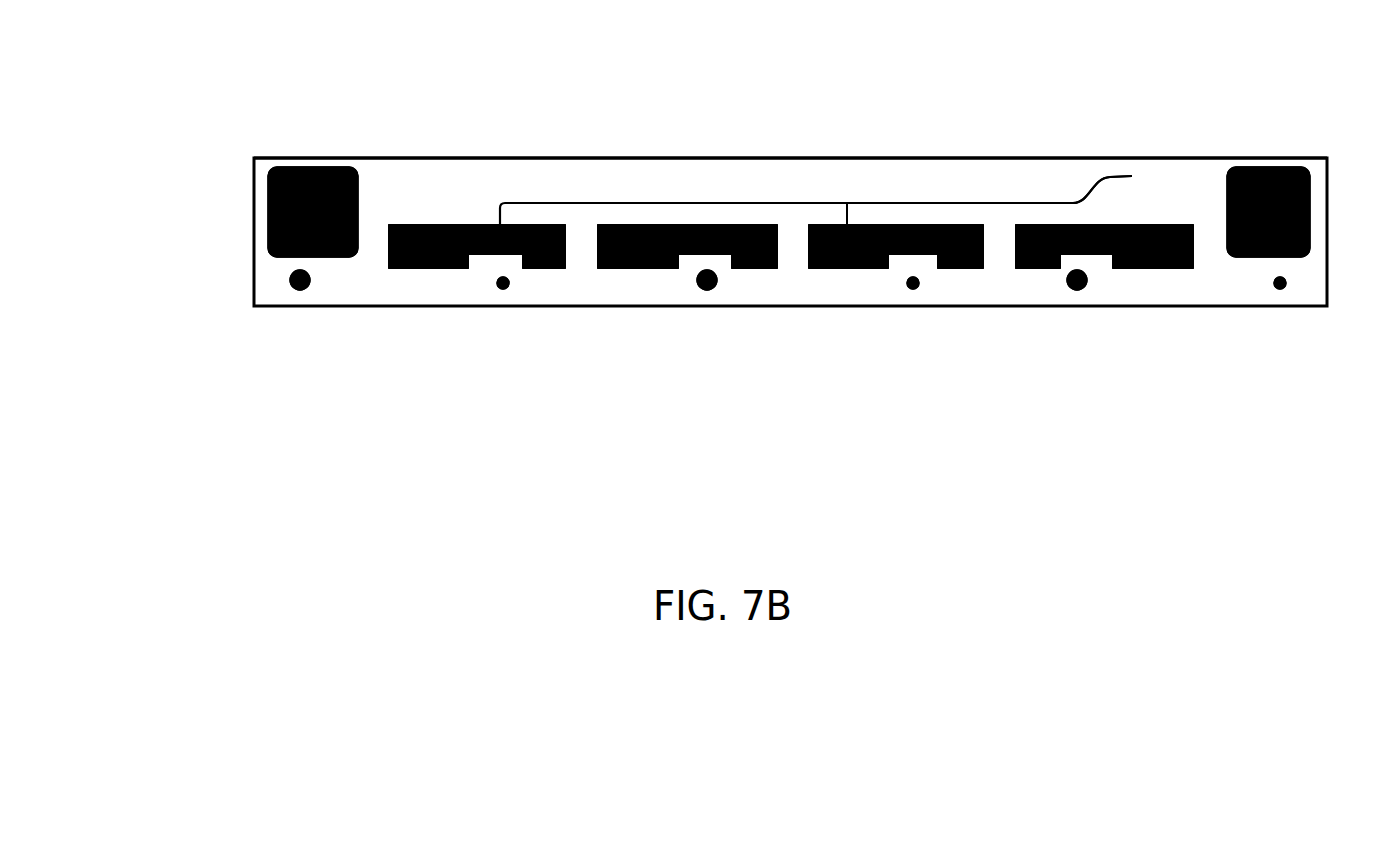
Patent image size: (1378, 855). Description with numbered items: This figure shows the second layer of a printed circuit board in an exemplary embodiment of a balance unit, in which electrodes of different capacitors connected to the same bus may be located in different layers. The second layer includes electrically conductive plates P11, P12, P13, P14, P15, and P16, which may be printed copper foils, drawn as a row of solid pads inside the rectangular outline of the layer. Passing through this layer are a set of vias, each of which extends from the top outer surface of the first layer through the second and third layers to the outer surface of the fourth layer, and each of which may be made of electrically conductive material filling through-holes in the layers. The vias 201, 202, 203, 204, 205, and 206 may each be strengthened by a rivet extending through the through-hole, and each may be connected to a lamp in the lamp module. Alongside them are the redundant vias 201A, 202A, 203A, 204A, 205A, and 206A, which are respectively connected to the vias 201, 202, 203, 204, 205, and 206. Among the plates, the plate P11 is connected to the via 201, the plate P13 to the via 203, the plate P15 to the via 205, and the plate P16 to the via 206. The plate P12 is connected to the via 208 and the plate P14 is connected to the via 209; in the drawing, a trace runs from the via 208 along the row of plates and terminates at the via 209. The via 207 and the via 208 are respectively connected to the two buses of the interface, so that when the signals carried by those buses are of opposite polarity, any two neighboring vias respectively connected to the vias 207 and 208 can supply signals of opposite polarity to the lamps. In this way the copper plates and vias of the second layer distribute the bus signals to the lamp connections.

The via 201 is at (306, 288).
The redundant via 201A is at (272, 331).
The via 202 is at (507, 288).
The redundant via 202A is at (467, 335).
The via 203 is at (713, 288).
The redundant via 203A is at (679, 331).
The via 204 is at (917, 288).
The redundant via 204A is at (875, 335).
The via 205 is at (1083, 288).
The redundant via 205A is at (1047, 331).
The via 206 is at (1280, 257).
The redundant via 206A is at (1318, 335).
The via 207 is at (400, 168).
The via 208 is at (515, 199).
The via 209 is at (1128, 170).
The electrically conductive plate P11 is at (347, 257).
The electrically conductive plate P12 is at (557, 227).
The electrically conductive plate P13 is at (632, 268).
The electrically conductive plate P14 is at (898, 227).
The electrically conductive plate P15 is at (1167, 268).
The electrically conductive plate P16 is at (1227, 183).